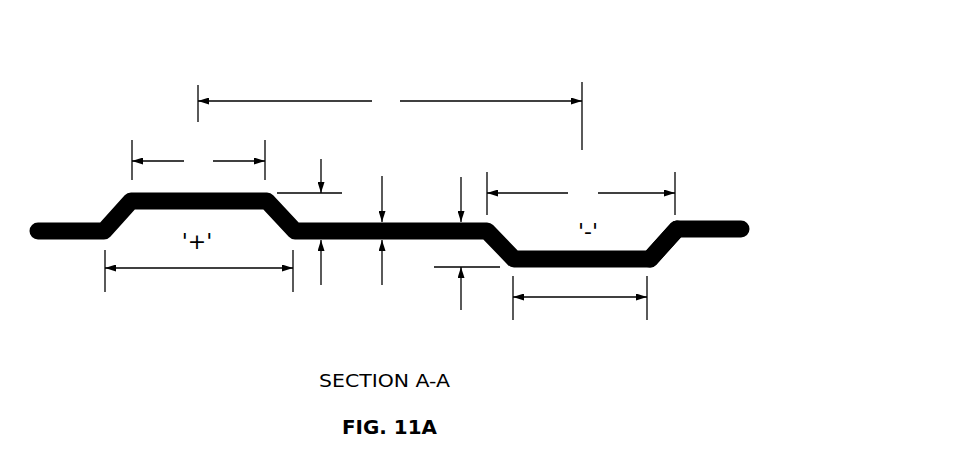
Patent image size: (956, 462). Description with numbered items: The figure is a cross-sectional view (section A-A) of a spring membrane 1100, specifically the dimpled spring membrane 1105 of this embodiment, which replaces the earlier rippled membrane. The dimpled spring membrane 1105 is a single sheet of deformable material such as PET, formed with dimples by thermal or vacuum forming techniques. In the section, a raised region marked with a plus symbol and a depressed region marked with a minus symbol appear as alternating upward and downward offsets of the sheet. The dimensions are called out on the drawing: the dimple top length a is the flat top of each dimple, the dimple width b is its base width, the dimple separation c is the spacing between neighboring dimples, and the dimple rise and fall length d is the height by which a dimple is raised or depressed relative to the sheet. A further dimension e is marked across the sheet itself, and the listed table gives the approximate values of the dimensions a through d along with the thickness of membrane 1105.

The spring membrane 1100 is at (422, 137).
The dimpled spring membrane 1105 is at (667, 250).
The dimple top length a is at (389, 235).
The dimple width b is at (390, 237).
The dimple separation c is at (390, 116).
The dimple rise and fall length d is at (388, 237).
The dimension e (membrane thickness) e is at (382, 217).